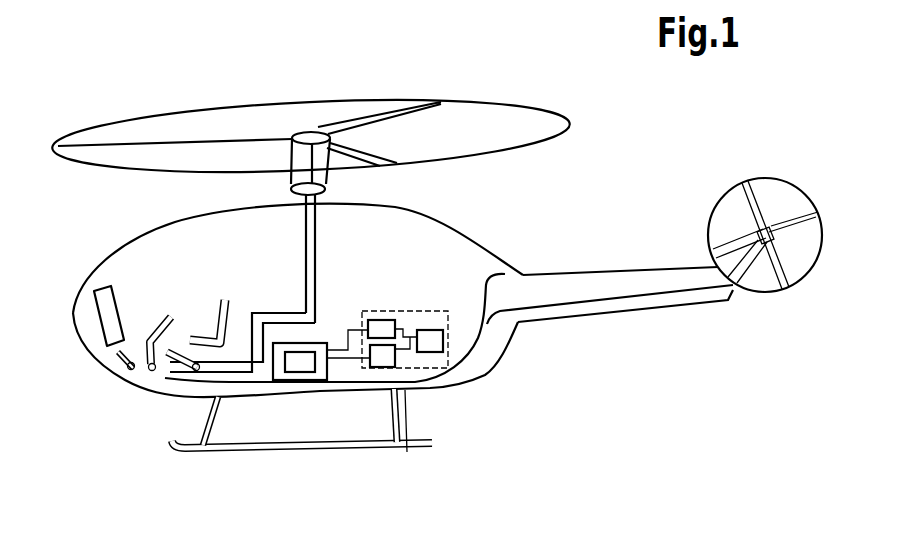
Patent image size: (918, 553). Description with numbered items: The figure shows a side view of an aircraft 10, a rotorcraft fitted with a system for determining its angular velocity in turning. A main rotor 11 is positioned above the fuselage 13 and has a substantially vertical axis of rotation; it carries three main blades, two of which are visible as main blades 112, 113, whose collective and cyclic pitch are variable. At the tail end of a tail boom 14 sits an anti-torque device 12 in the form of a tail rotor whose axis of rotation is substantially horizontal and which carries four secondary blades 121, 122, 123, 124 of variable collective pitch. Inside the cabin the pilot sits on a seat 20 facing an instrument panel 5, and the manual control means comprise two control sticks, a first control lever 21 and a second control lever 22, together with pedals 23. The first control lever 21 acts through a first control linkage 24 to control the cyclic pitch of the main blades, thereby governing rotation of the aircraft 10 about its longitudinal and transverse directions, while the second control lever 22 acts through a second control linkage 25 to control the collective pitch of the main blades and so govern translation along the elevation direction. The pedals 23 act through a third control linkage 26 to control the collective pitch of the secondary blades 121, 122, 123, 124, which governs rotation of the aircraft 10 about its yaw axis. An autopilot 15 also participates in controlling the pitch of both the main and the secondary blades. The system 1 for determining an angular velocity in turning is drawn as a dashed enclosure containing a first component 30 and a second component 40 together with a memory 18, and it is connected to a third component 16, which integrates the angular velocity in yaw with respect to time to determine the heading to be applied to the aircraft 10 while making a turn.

The system for determining an angular velocity in turning 1 is at (430, 311).
The instrument panel 5 is at (74, 315).
The aircraft 10 is at (514, 450).
The main rotor 11 is at (95, 143).
The anti-torque device 12 is at (819, 253).
The fuselage 13 is at (510, 346).
The tail boom 14 is at (596, 314).
The autopilot 15 is at (312, 382).
The third component 16 is at (295, 382).
The memory 18 is at (448, 340).
The seat 20 is at (220, 314).
The first control lever 21 is at (166, 316).
The second control lever 22 is at (168, 360).
The pedals 23 is at (118, 358).
The first control linkage 24 is at (322, 285).
The second control linkage 25 is at (305, 270).
The third control linkage 26 is at (512, 274).
The first component 30 is at (372, 311).
The second component 40 is at (400, 362).
The main blade 112 is at (386, 162).
The main blade 113 is at (407, 110).
The secondary blade 121 is at (716, 242).
The secondary blade 122 is at (742, 182).
The secondary blade 123 is at (800, 207).
The secondary blade 124 is at (787, 288).